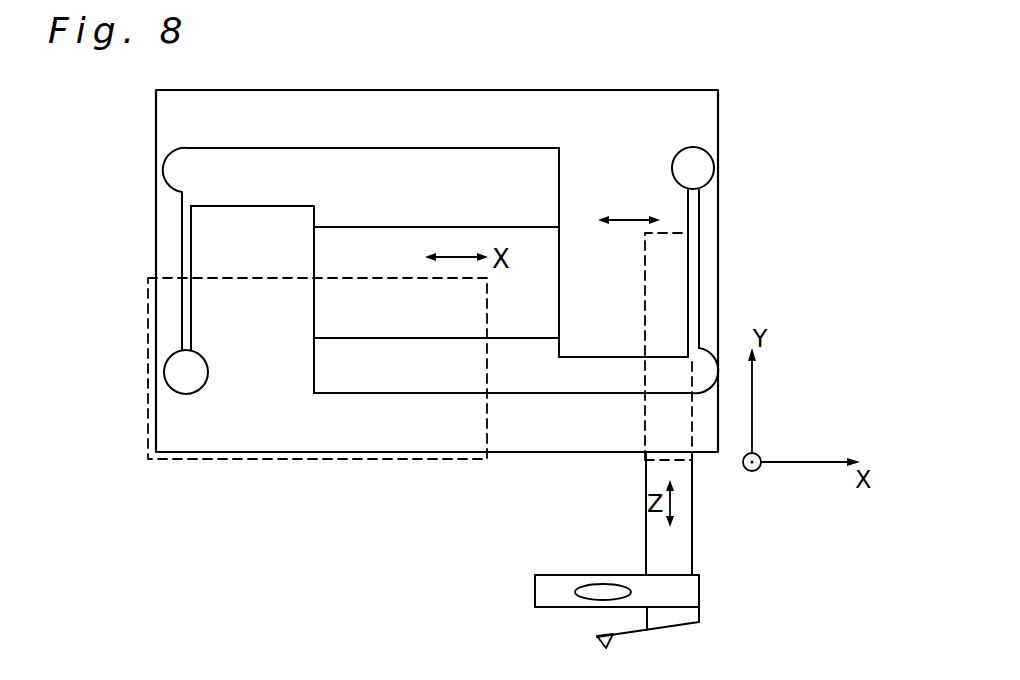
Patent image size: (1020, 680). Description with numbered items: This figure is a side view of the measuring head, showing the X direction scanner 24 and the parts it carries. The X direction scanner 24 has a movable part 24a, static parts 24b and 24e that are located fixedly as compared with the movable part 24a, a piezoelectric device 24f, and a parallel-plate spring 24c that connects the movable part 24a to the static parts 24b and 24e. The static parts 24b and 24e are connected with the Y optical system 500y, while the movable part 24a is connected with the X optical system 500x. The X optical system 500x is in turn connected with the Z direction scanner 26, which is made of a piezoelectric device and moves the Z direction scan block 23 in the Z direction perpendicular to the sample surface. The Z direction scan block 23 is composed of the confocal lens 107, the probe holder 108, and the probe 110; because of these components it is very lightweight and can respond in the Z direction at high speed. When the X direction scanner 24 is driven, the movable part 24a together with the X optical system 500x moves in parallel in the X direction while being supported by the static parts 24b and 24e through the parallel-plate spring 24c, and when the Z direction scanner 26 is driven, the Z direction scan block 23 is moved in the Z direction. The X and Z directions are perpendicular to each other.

The X direction scanner 24 is at (592, 85).
The movable part 24a is at (610, 320).
The static part 24b is at (223, 337).
The parallel-plate spring 24c is at (162, 252).
The static part 24e is at (425, 430).
The piezoelectric device 24f is at (354, 258).
The X optical system 500x is at (675, 250).
The Y optical system 500y is at (290, 462).
The Z direction scanner 26 is at (672, 545).
The Z direction scan block 23 is at (717, 597).
The confocal lens 107 is at (578, 593).
The probe holder 108 is at (672, 617).
The probe 110 is at (597, 643).